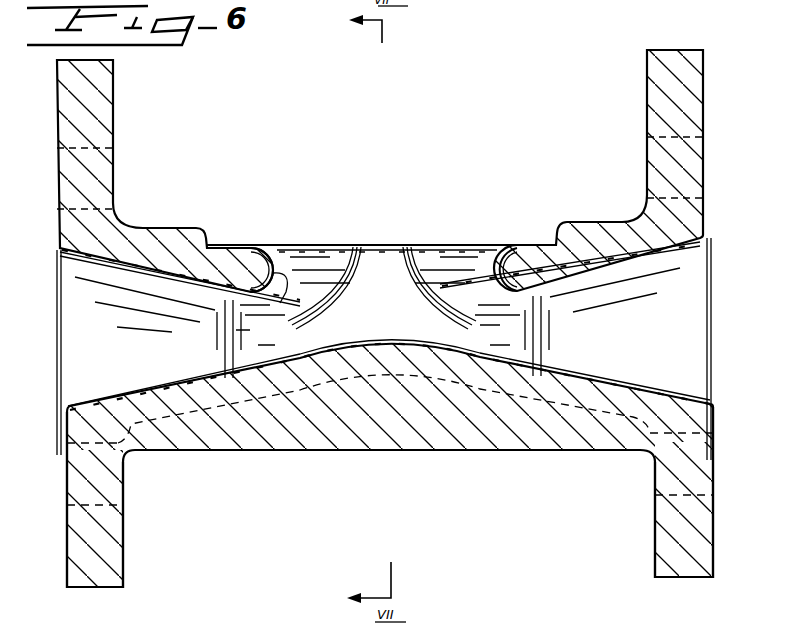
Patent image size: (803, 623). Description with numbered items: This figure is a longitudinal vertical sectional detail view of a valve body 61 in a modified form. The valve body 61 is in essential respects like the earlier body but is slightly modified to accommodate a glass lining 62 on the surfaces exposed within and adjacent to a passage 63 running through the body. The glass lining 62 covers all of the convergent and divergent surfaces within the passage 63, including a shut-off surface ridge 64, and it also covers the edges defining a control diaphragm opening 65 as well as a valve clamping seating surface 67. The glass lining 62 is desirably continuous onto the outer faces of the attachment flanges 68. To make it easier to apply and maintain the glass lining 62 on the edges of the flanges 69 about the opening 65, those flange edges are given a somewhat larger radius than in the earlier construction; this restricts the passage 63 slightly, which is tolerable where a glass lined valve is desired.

The valve body 61 is at (181, 242).
The glass lining 62 is at (473, 358).
The passage 63 is at (92, 334).
The shut-off surface ridge 64 is at (390, 348).
The control diaphragm opening 65 is at (279, 278).
The valve clamping seating surface 67 is at (239, 251).
The attachment flanges 68 is at (101, 549).
The flanges 69 is at (270, 256).